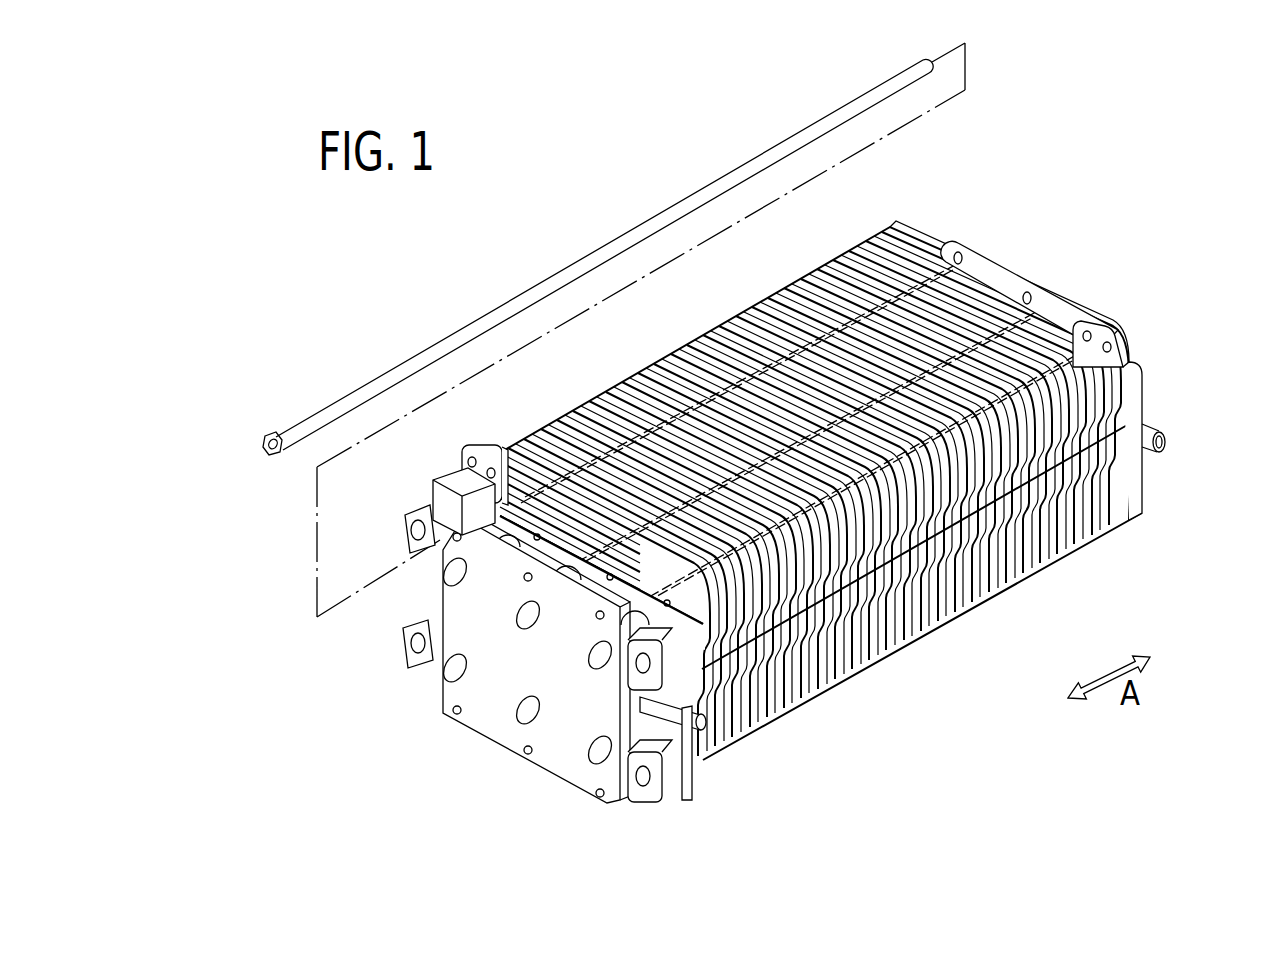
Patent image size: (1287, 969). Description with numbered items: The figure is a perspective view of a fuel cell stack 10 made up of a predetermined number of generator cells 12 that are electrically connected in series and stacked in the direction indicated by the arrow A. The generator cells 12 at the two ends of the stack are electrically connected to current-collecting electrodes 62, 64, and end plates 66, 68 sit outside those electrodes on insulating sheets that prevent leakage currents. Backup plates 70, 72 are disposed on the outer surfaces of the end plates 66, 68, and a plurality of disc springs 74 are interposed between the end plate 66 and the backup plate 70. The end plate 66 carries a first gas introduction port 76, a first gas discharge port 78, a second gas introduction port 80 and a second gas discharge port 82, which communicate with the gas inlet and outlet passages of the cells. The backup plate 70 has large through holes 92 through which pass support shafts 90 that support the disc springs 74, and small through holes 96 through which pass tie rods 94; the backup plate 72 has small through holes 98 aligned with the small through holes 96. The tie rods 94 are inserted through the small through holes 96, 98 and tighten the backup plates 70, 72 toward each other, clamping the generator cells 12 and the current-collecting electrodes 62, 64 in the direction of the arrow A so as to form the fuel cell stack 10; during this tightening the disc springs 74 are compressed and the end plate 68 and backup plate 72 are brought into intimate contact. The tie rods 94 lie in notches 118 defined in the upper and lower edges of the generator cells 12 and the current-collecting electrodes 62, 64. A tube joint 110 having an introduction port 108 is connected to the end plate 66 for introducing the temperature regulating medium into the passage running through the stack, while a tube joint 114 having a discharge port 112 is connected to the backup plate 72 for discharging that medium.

The fuel cell stack 10 is at (305, 281).
The generator cells 12 is at (690, 383).
The current-collecting electrode 62 is at (480, 462).
The current-collecting electrode 64 is at (1110, 330).
The end plate 66 is at (458, 490).
The end plate 68 is at (912, 245).
The backup plate 70 is at (490, 722).
The backup plate 72 is at (1040, 290).
The disc springs 74 is at (495, 545).
The first gas introduction port 76 is at (408, 528).
The first gas discharge port 78 is at (640, 800).
The second gas introduction port 80 is at (633, 670).
The second gas discharge port 82 is at (408, 645).
The support shafts 90 is at (528, 618).
The large through holes 92 is at (450, 578).
The tie rods 94 is at (324, 410).
The small through holes 96 is at (525, 752).
The small through holes 98 is at (952, 243).
The introduction port 108 is at (712, 742).
The tube joint 110 is at (680, 765).
The discharge port 112 is at (1225, 480).
The tube joint 114 is at (1150, 430).
The notches 118 is at (848, 325).